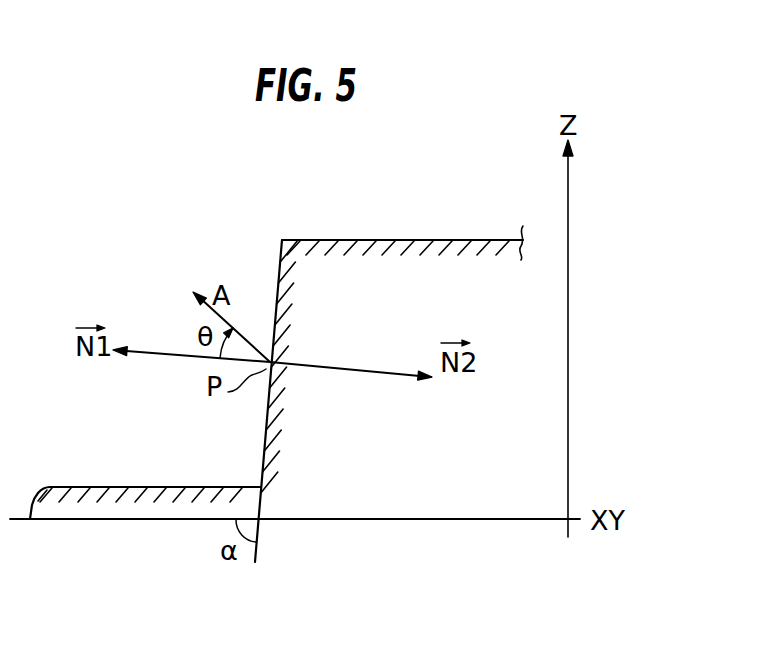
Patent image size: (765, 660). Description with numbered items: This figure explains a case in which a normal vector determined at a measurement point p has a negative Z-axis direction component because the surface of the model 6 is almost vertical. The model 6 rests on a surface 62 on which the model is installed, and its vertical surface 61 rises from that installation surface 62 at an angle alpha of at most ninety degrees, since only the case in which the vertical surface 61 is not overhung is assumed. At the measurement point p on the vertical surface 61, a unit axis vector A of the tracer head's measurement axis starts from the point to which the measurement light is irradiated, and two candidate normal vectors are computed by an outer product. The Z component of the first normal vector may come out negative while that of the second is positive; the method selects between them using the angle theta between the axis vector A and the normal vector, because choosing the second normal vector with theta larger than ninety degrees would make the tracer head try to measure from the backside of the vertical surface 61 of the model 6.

The model 6 is at (407, 240).
The vertical surface 61 is at (265, 440).
The surface on which the model is installed 62 is at (144, 521).